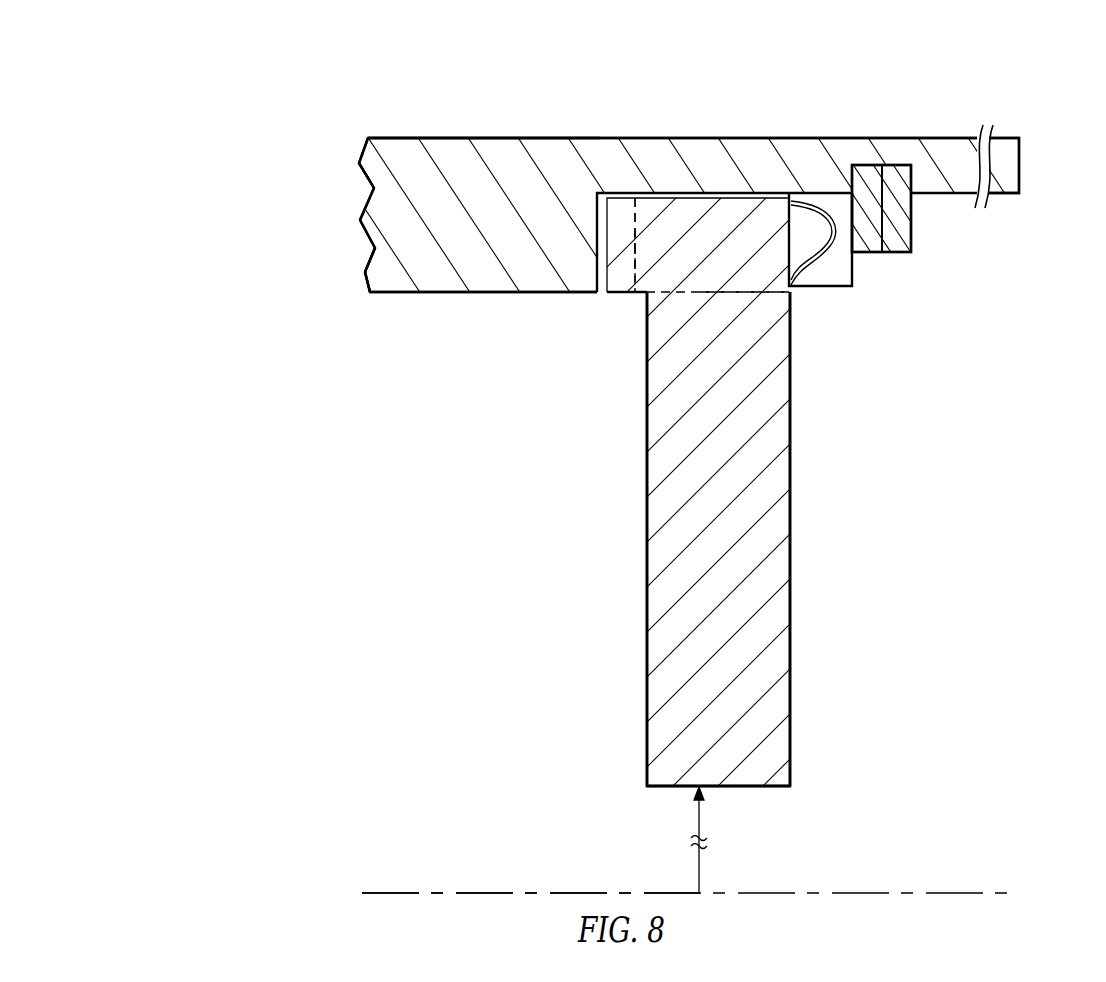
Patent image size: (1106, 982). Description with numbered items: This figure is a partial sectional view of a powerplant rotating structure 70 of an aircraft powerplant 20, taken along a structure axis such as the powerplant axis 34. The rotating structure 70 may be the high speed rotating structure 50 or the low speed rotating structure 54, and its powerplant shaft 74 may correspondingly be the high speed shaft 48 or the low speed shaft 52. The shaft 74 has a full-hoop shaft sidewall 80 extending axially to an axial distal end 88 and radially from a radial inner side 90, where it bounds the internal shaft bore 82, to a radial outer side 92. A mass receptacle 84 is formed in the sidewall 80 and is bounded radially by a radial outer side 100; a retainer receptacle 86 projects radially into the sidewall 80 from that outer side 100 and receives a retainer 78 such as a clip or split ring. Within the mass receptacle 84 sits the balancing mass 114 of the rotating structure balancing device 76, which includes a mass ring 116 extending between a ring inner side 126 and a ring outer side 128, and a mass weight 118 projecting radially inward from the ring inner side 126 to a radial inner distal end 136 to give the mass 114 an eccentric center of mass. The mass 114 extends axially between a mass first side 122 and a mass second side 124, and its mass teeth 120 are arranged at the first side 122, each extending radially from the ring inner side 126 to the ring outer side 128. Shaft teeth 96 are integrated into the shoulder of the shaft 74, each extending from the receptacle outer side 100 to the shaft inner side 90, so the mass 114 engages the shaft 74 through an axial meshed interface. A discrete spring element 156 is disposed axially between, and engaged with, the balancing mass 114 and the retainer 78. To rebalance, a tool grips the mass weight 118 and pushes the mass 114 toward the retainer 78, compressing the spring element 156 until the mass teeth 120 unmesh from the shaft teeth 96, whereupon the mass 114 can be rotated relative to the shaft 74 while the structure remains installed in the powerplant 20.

The aircraft powerplant 20 is at (227, 90).
The powerplant axis 34 is at (382, 893).
The high speed shaft 48 is at (368, 245).
The low speed shaft 52 is at (370, 260).
The powerplant shaft 74 is at (367, 282).
The high speed rotating structure 50 is at (350, 163).
The low speed rotating structure 54 is at (366, 175).
The powerplant rotating structure 70 is at (367, 204).
The rotating structure balancing device 76 is at (840, 383).
The retainer 78 is at (890, 265).
The shaft sidewall 80 is at (458, 223).
The shaft bore 82 is at (458, 650).
The mass receptacle 84 is at (746, 184).
The retainer receptacle 86 is at (897, 155).
The axial distal end 88 is at (1019, 165).
The radial inner side 90 is at (383, 292).
The radial outer side 92 is at (398, 138).
The shaft teeth 96 is at (650, 250).
The radial outer side of the mass receptacle 100 is at (672, 194).
The balancing mass 114 is at (822, 610).
The mass ring 116 is at (742, 234).
The mass weight 118 is at (737, 564).
The mass teeth 120 is at (633, 296).
The mass first side 122 is at (646, 680).
The mass second side 124 is at (790, 707).
The ring inner side 126 is at (758, 295).
The ring outer side 128 is at (697, 196).
The radial inner distal end 136 is at (772, 788).
The spring element 156 is at (845, 297).